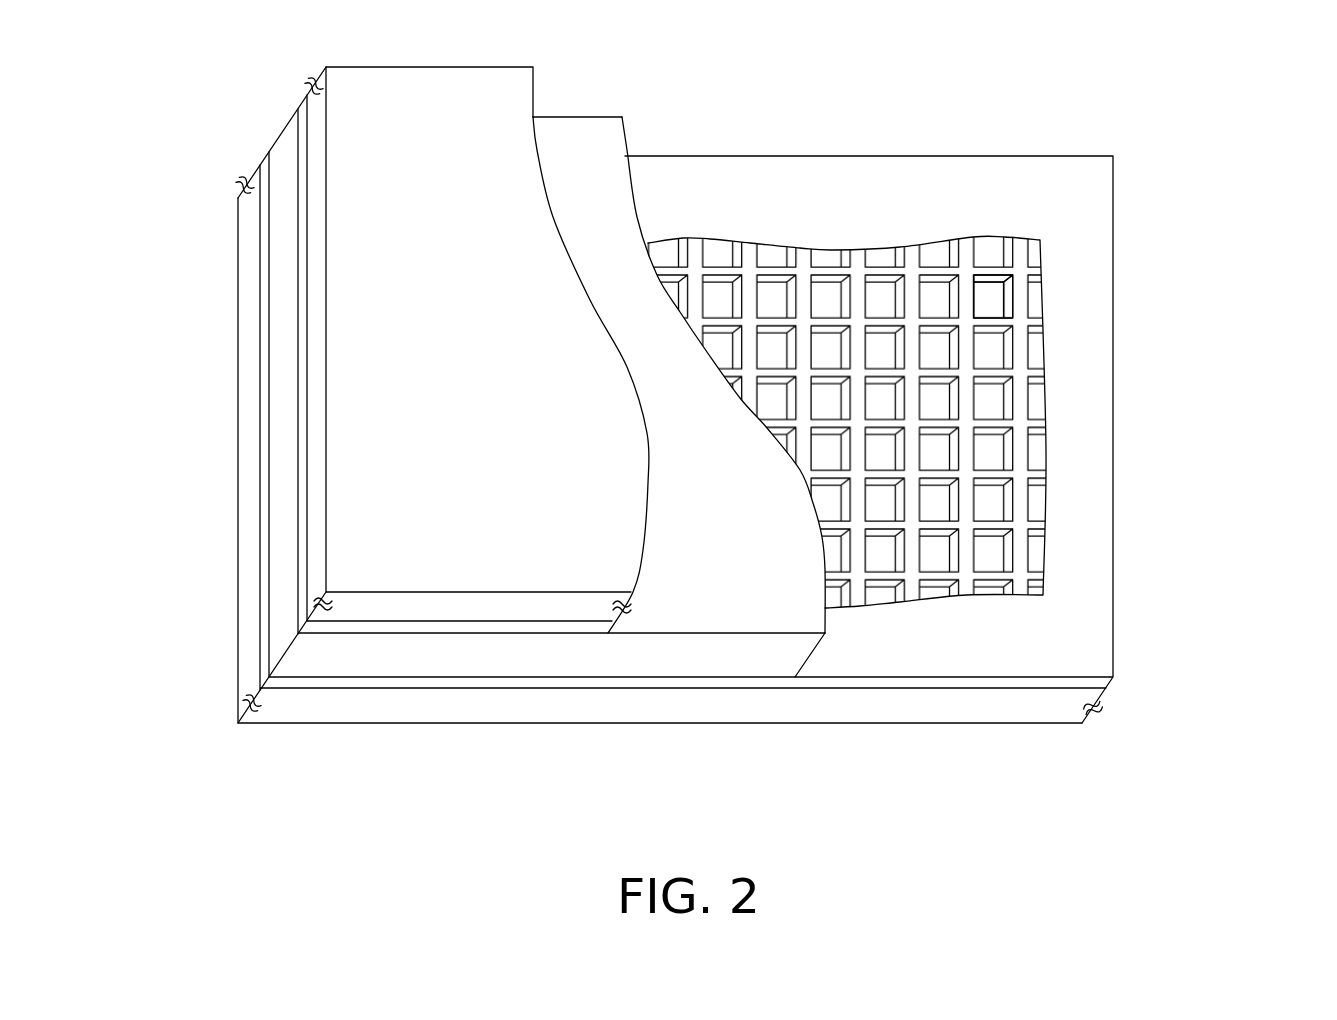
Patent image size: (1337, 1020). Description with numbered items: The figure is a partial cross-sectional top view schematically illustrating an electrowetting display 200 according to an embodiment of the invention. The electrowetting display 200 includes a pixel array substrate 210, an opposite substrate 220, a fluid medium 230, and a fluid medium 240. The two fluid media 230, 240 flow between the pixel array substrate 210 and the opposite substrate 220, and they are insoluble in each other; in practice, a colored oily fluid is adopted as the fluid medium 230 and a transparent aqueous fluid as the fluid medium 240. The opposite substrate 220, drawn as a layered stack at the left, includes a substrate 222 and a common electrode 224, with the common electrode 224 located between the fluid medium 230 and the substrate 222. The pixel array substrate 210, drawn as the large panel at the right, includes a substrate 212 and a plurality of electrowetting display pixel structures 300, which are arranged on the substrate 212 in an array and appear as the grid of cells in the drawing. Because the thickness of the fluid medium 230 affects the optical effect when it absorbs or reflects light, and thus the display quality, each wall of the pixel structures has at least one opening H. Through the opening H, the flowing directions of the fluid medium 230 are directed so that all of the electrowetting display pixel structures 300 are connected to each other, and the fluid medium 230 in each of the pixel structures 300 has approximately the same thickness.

The electrowetting display 200 is at (710, 458).
The pixel array substrate 210 is at (785, 459).
The substrate 212 is at (1272, 560).
The opposite substrate 220 is at (456, 350).
The substrate 222 is at (317, 506).
The common electrode 224 is at (302, 452).
The fluid medium 230 is at (456, 414).
The fluid medium 240 is at (270, 391).
The electrowetting display pixel structures 300 is at (1008, 563).
The opening H is at (995, 280).